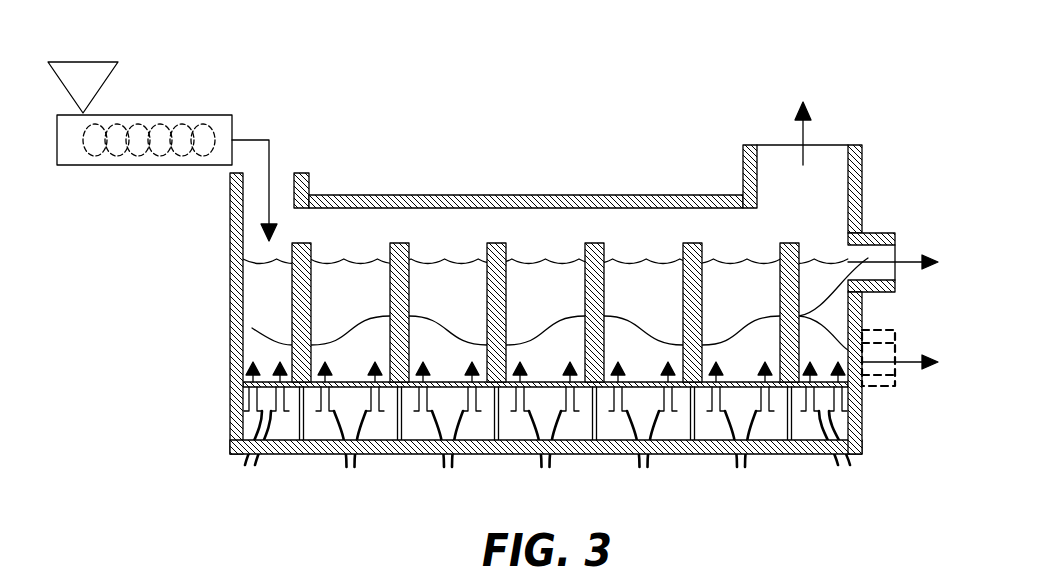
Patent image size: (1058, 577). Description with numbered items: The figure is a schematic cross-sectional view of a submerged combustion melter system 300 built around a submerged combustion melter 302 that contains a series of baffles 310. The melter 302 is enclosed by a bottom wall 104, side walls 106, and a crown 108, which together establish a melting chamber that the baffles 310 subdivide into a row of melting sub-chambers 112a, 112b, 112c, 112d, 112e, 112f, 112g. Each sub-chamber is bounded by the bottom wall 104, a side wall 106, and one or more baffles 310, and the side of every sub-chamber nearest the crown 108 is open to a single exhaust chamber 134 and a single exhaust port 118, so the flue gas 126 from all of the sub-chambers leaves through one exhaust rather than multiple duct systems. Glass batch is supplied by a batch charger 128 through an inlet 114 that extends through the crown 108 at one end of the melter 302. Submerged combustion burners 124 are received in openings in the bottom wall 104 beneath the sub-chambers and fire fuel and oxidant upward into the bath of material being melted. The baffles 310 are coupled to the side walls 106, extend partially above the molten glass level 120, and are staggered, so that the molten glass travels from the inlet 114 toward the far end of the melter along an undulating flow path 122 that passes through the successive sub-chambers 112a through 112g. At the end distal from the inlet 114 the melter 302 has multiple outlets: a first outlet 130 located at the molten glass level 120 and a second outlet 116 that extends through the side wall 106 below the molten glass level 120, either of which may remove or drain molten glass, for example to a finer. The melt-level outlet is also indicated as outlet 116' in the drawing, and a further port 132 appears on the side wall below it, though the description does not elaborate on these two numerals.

The submerged combustion melter system 300 is at (188, 417).
The submerged combustion melter 302 is at (502, 78).
The bottom wall 104 is at (265, 380).
The side wall 106 is at (232, 250).
The crown 108 is at (632, 195).
The first melting sub-chamber 112a is at (277, 248).
The second melting sub-chamber 112b is at (369, 247).
The third melting sub-chamber 112c is at (465, 243).
The fourth melting sub-chamber 112d is at (557, 245).
The fifth melting sub-chamber 112e is at (650, 245).
The sixth melting sub-chamber 112f is at (743, 250).
The seventh melting sub-chamber 112g is at (849, 191).
The inlet 114 is at (284, 173).
The outlet 116 is at (900, 397).
The outlet 116' is at (905, 202).
The exhaust port 118 is at (773, 145).
The molten glass level 120 is at (252, 265).
The undulating flow path 122 is at (553, 325).
The submerged combustion burner 124 is at (554, 444).
The flue gas 126 is at (804, 136).
The batch charger 128 is at (100, 76).
The first outlet 130 is at (895, 242).
The drain port 132 is at (882, 330).
The exhaust chamber 134 is at (430, 200).
The baffle 310 is at (300, 243).